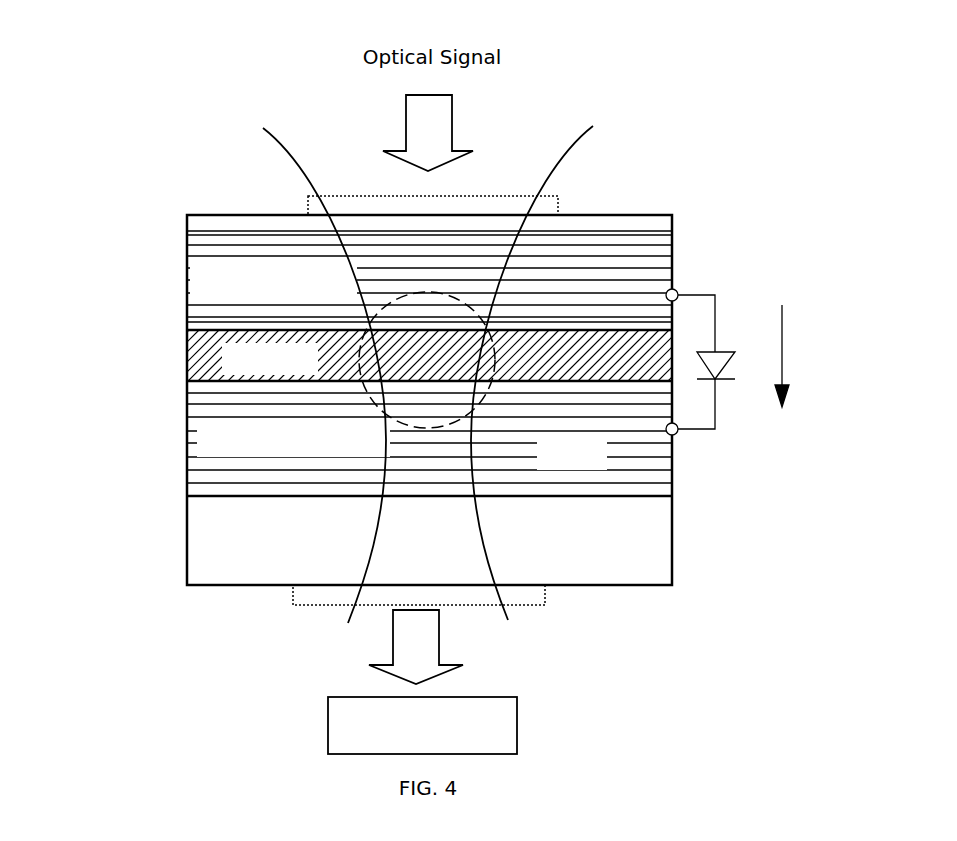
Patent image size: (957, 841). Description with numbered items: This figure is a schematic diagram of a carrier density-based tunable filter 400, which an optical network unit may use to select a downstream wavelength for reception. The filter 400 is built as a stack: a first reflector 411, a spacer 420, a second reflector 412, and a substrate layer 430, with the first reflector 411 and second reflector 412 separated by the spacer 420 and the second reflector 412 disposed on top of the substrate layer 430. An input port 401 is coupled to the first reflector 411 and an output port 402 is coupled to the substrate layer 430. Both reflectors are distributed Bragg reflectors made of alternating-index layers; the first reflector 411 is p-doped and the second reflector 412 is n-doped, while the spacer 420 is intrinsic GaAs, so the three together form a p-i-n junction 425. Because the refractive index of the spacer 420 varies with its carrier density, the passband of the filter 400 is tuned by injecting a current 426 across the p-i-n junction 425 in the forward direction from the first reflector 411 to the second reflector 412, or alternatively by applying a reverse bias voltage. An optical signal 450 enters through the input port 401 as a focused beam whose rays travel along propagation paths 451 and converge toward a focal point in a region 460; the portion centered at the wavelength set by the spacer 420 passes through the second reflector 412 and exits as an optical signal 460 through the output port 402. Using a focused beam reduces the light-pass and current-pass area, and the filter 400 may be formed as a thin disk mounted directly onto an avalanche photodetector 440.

The carrier density-based tunable filter 400 is at (118, 63).
The input port 401 is at (558, 196).
The output port 402 is at (546, 592).
The first reflector 411 is at (175, 218).
The second reflector 412 is at (175, 385).
The spacer 420 is at (187, 363).
The p-i-n junction 425 is at (698, 295).
The current 426 is at (782, 360).
The substrate layer 430 is at (187, 538).
The avalanche photodetector (APD) 440 is at (328, 735).
The optical signal 450 is at (452, 131).
The propagation paths 451 is at (290, 150).
The optical signal / region 460 is at (482, 400).